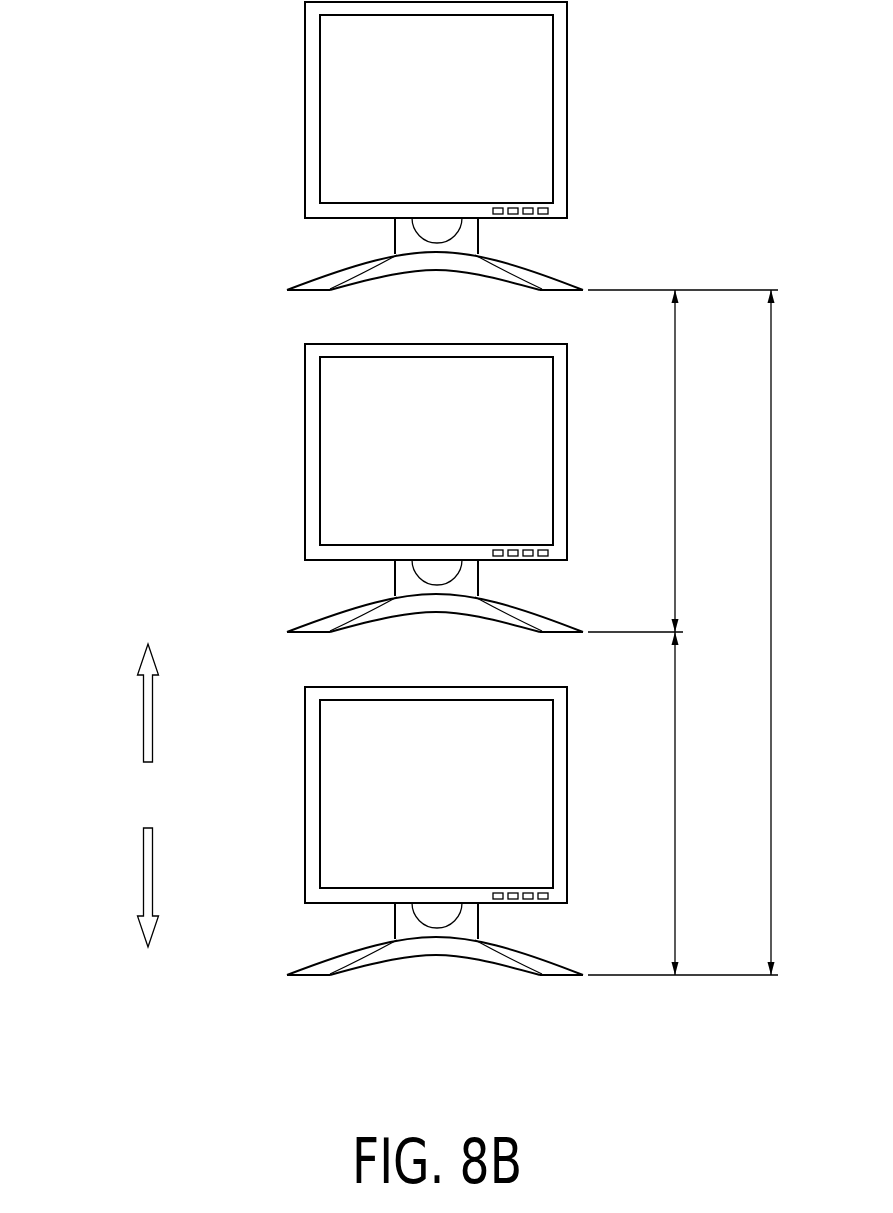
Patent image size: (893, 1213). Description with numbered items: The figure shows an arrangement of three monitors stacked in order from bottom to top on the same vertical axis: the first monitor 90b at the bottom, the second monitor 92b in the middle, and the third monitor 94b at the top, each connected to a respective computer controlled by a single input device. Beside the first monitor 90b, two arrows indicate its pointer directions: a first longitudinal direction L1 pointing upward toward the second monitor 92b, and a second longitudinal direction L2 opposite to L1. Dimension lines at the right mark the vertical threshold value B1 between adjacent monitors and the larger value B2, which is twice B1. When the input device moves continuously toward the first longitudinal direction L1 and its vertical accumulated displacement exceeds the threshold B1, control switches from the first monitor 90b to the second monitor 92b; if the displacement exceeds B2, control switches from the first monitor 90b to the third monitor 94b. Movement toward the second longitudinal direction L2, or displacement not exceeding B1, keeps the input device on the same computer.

The third monitor 94b is at (305, 110).
The second monitor 92b is at (305, 452).
The first monitor 90b is at (305, 795).
The first longitudinal direction L1 is at (144, 718).
The second longitudinal direction L2 is at (144, 875).
The vertical threshold value B1 is at (659, 632).
The twice the vertical threshold value B2 is at (754, 632).